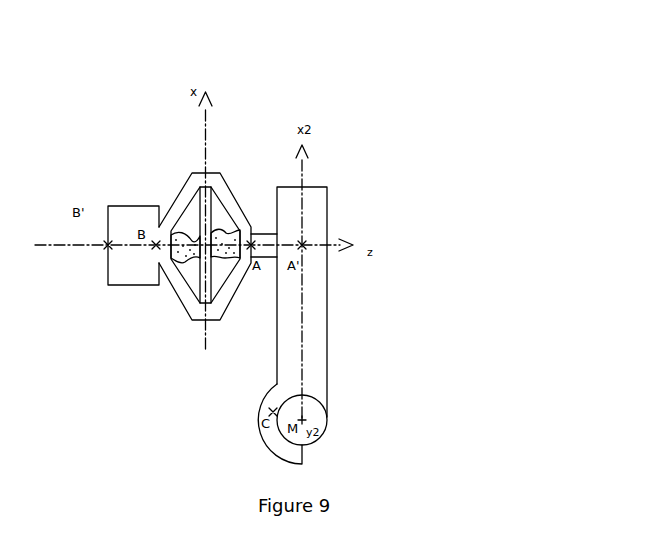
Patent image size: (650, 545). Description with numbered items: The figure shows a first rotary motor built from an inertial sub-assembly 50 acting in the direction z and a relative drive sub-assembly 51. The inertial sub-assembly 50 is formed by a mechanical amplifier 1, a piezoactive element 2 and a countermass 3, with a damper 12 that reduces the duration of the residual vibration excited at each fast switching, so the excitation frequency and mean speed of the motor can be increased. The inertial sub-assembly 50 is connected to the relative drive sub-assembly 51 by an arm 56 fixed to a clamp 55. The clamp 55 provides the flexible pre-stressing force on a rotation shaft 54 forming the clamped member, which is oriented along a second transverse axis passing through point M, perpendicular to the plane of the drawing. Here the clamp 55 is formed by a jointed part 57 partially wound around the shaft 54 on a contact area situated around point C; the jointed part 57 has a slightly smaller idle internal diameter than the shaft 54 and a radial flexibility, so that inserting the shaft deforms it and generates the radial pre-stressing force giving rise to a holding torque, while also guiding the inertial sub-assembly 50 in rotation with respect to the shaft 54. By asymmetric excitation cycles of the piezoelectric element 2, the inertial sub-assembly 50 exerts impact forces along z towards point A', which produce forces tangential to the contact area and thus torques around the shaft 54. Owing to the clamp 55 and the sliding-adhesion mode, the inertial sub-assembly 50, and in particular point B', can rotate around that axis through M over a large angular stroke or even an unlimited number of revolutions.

The mechanical amplifier 1 is at (190, 172).
The piezoactive element 2 is at (198, 281).
The countermass 3 is at (121, 206).
The damper 12 is at (224, 228).
The inertial sub-assembly 50 is at (107, 138).
The relative drive sub-assembly 51 is at (484, 223).
The rotation shaft 54 is at (333, 421).
The clamp 55 is at (414, 312).
The arm 56 is at (328, 327).
The jointed part 57 is at (257, 410).